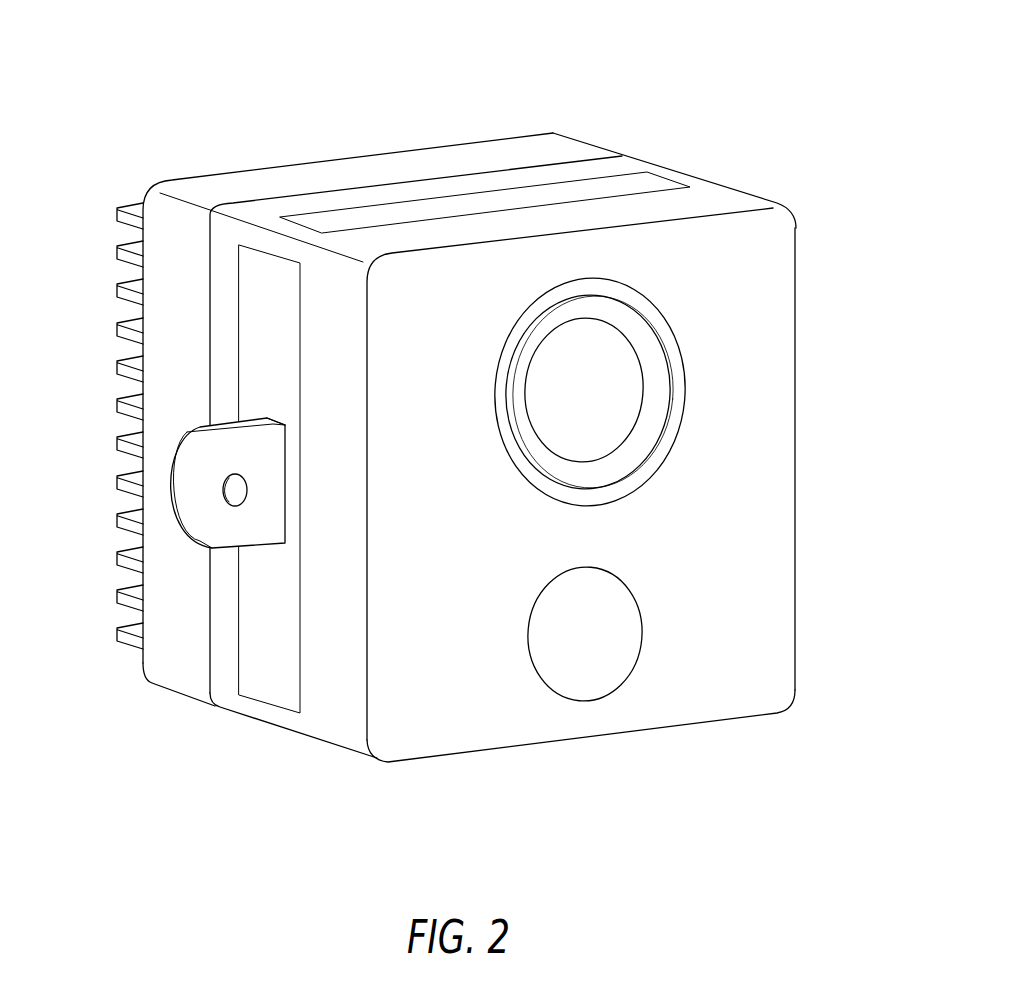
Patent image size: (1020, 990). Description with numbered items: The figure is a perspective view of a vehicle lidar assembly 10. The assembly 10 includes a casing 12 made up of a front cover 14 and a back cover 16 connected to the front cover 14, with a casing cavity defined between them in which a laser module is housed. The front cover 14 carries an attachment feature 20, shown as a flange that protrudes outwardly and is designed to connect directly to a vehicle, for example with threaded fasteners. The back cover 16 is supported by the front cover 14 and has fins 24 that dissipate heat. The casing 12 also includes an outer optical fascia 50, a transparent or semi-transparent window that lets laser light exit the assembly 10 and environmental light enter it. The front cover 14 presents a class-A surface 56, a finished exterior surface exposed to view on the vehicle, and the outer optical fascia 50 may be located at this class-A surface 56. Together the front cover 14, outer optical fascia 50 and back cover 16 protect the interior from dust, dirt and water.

The vehicle lidar assembly 10 is at (757, 61).
The casing 12 is at (827, 312).
The front cover 14 is at (752, 261).
The back cover 16 is at (370, 167).
The attachment feature 20 is at (195, 545).
The fins 24 is at (118, 290).
The outer optical fascia 50 is at (615, 627).
The class-A surface 56 is at (752, 510).